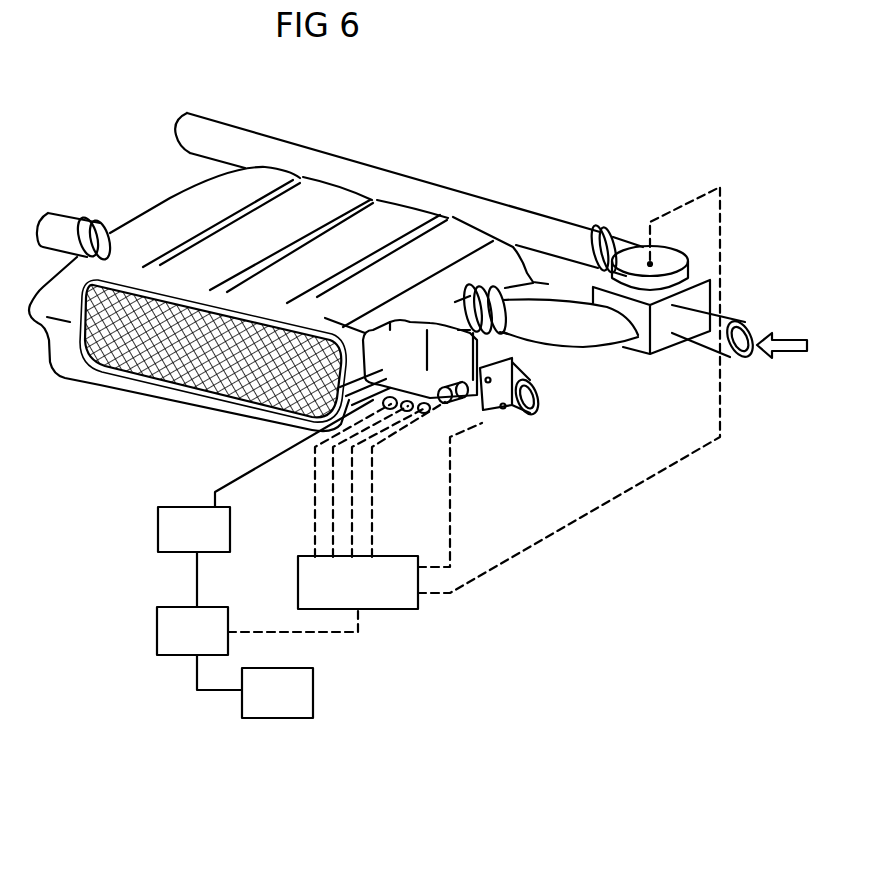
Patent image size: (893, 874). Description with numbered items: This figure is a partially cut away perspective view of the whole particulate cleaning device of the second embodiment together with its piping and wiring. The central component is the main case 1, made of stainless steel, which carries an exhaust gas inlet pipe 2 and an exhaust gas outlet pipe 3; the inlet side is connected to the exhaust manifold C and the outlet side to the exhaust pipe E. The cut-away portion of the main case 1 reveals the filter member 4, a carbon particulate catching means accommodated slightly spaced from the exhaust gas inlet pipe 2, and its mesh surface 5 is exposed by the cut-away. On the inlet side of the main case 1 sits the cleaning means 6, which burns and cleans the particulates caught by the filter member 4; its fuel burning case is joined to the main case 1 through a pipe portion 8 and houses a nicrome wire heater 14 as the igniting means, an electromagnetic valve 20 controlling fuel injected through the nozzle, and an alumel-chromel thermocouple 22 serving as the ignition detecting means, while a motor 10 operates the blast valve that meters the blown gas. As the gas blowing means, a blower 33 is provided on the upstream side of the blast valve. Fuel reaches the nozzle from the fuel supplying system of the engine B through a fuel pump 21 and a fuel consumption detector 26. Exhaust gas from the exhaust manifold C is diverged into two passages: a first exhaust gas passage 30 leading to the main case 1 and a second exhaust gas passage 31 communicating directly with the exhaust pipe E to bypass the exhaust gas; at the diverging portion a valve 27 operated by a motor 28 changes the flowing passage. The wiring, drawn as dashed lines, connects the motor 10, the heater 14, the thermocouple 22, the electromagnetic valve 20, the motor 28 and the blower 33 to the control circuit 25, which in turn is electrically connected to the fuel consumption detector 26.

The main case 1 is at (68, 377).
The exhaust gas inlet pipe 2 is at (530, 283).
The exhaust gas outlet pipe 3 is at (108, 228).
The filter member 4 is at (134, 378).
The filter screen 5 is at (177, 387).
The cleaning means 6 is at (495, 349).
The pipe portion 8 is at (297, 432).
The motor 10 is at (453, 403).
The nicrome wire heater 14 is at (387, 410).
The electromagnetic valve 20 is at (380, 436).
The fuel pump 21 is at (158, 527).
The alumel-chromel thermocouple 22 is at (383, 432).
The control circuit 25 is at (395, 611).
The fuel consumption detector 26 is at (157, 628).
The valve 27 is at (650, 353).
The motor 28 is at (677, 260).
The first exhaust gas passage 30 is at (597, 335).
The second exhaust gas passage 31 is at (545, 232).
The blower 33 is at (532, 404).
The exhaust pipe E is at (67, 227).
The exhaust manifold C is at (717, 323).
The engine B is at (275, 718).